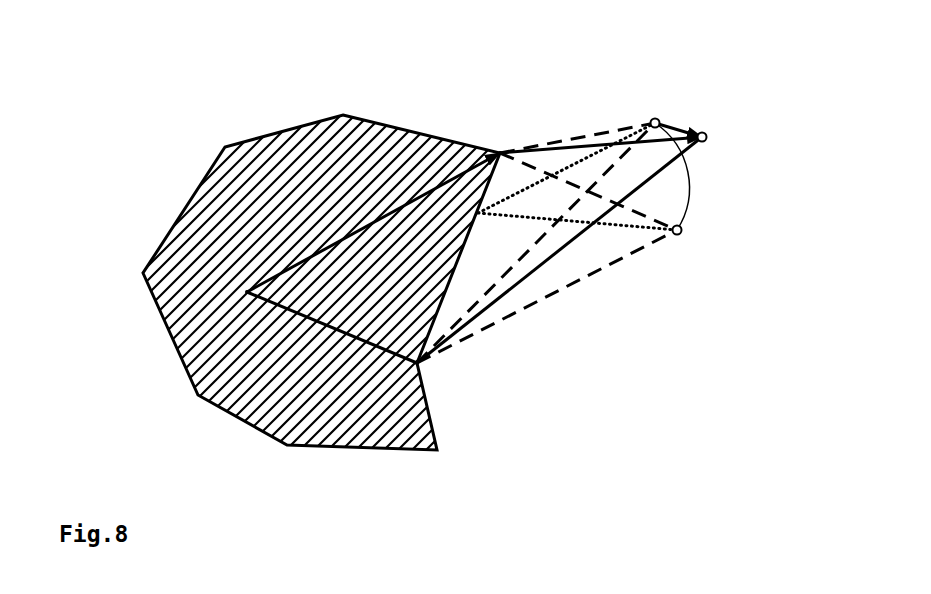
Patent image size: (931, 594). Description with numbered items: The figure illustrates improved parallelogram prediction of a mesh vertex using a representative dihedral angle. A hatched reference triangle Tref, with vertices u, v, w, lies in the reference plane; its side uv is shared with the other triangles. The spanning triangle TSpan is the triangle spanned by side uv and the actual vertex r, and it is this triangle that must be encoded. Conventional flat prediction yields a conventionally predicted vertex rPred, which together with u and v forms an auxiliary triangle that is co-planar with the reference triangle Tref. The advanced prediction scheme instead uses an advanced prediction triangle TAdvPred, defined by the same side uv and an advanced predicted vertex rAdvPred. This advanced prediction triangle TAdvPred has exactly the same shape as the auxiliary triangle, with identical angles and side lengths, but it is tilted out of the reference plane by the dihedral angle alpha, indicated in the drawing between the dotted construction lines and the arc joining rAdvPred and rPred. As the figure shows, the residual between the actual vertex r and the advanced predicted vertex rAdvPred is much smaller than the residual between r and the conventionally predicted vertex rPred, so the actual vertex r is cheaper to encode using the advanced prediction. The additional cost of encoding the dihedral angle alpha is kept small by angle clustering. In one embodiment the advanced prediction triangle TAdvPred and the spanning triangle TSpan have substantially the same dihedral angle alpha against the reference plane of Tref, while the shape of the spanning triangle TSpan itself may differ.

The reference triangle Tref is at (373, 258).
The vertex u of reference triangle u is at (500, 140).
The vertex v of reference triangle v is at (403, 383).
The vertex w of reference triangle w is at (230, 287).
The actual vertex r is at (717, 139).
The advanced predicted vertex rAdvPred is at (667, 115).
The conventionally predicted vertex rPred is at (707, 228).
The spanning triangle TSpan is at (563, 247).
The advanced prediction triangle TAdvPred is at (548, 237).
The dihedral angle alpha is at (577, 176).